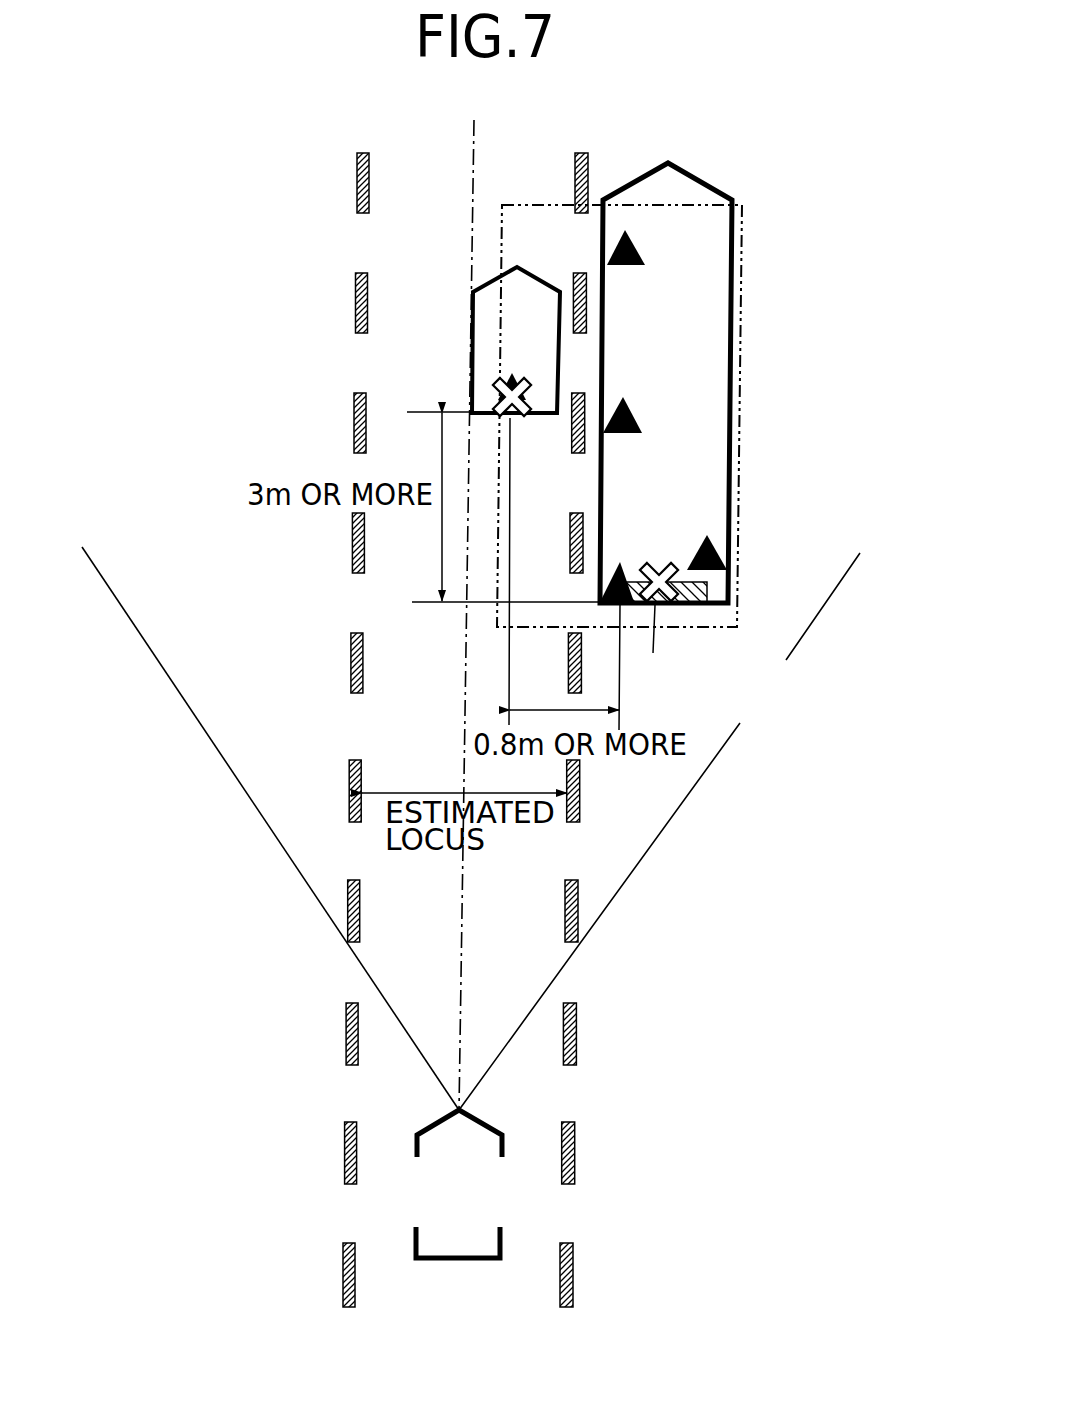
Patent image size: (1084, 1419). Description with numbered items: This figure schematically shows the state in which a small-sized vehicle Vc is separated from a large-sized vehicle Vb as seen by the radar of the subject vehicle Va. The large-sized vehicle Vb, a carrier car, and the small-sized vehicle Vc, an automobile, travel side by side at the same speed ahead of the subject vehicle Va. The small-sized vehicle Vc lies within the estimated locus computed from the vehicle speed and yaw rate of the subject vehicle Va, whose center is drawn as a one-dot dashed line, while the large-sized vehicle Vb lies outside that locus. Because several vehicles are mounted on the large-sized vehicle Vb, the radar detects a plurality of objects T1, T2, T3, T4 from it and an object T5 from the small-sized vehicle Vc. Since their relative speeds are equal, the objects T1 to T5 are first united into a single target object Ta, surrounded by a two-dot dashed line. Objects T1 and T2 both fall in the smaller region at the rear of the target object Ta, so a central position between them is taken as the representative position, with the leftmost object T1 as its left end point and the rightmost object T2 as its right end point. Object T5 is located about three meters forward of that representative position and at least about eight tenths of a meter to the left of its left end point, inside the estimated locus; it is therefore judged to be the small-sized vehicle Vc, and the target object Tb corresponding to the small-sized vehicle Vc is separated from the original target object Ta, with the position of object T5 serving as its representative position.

The subject vehicle Va is at (448, 1243).
The large-sized vehicle Vb is at (695, 178).
The small-sized vehicle Vc is at (490, 285).
The target object Ta is at (830, 282).
The target object corresponding to the small-sized vehicle Tb is at (458, 385).
The object T1 is at (626, 563).
The object T2 is at (718, 553).
The object T3 is at (635, 420).
The object T4 is at (637, 247).
The object T5 is at (497, 397).